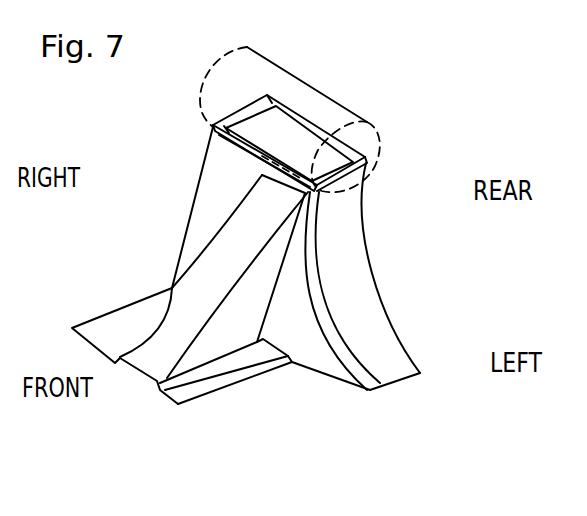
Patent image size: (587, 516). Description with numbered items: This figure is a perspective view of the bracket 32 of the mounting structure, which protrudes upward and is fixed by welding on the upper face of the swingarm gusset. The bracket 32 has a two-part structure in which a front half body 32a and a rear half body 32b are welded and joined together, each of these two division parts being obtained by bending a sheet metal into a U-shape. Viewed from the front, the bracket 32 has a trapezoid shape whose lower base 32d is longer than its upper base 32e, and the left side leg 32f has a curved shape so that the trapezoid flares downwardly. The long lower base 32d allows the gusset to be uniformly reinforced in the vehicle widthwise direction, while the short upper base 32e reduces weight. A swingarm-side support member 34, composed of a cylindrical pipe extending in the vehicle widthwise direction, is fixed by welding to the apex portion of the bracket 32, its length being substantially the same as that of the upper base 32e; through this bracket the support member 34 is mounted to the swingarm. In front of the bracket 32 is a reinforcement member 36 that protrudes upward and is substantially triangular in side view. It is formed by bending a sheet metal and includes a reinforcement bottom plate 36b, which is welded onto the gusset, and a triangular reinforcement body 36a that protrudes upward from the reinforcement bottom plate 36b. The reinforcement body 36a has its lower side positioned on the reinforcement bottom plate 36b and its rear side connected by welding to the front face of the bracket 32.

The bracket 32 is at (293, 259).
The front half body 32a is at (215, 182).
The rear half body 32b is at (350, 236).
The lower base 32d is at (392, 388).
The upper base 32e is at (345, 151).
The left side leg 32f is at (377, 338).
The swingarm-side support member 34 is at (287, 70).
The reinforcement member 36 is at (190, 332).
The reinforcement body 36a is at (233, 330).
The reinforcement bottom plate 36b is at (300, 441).